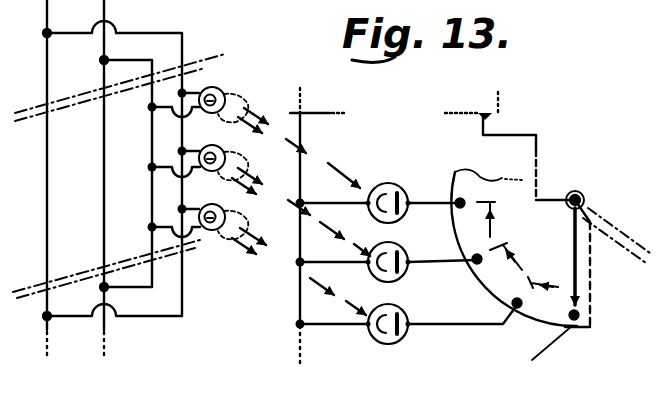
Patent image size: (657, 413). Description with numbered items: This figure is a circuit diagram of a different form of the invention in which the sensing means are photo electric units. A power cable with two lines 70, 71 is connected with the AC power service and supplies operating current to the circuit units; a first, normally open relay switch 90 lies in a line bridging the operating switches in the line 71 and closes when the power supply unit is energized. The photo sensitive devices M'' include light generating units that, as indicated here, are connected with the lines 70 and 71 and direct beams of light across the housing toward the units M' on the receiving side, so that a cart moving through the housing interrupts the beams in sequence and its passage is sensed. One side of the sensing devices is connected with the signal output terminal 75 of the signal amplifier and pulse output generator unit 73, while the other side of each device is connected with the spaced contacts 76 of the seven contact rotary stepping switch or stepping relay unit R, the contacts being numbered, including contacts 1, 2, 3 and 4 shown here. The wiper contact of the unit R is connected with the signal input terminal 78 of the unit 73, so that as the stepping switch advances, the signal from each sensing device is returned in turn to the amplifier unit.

The relay switch 90 is at (0, 32).
The line 70 is at (43, 180).
The line 71 is at (100, 180).
The photo sensitive devices M'' is at (284, 182).
The receiving motors M' is at (396, 243).
The signal amplifier and pulse output generator unit 73 is at (306, 107).
The signal output terminal 75 is at (303, 117).
The spaced contacts 76 is at (462, 199).
The signal input terminal 78 is at (490, 122).
The rotary stepping switch unit R is at (612, 160).
The contact 1 is at (579, 307).
The contact 2 is at (535, 297).
The contact 3 is at (497, 263).
The contact 4 is at (475, 217).